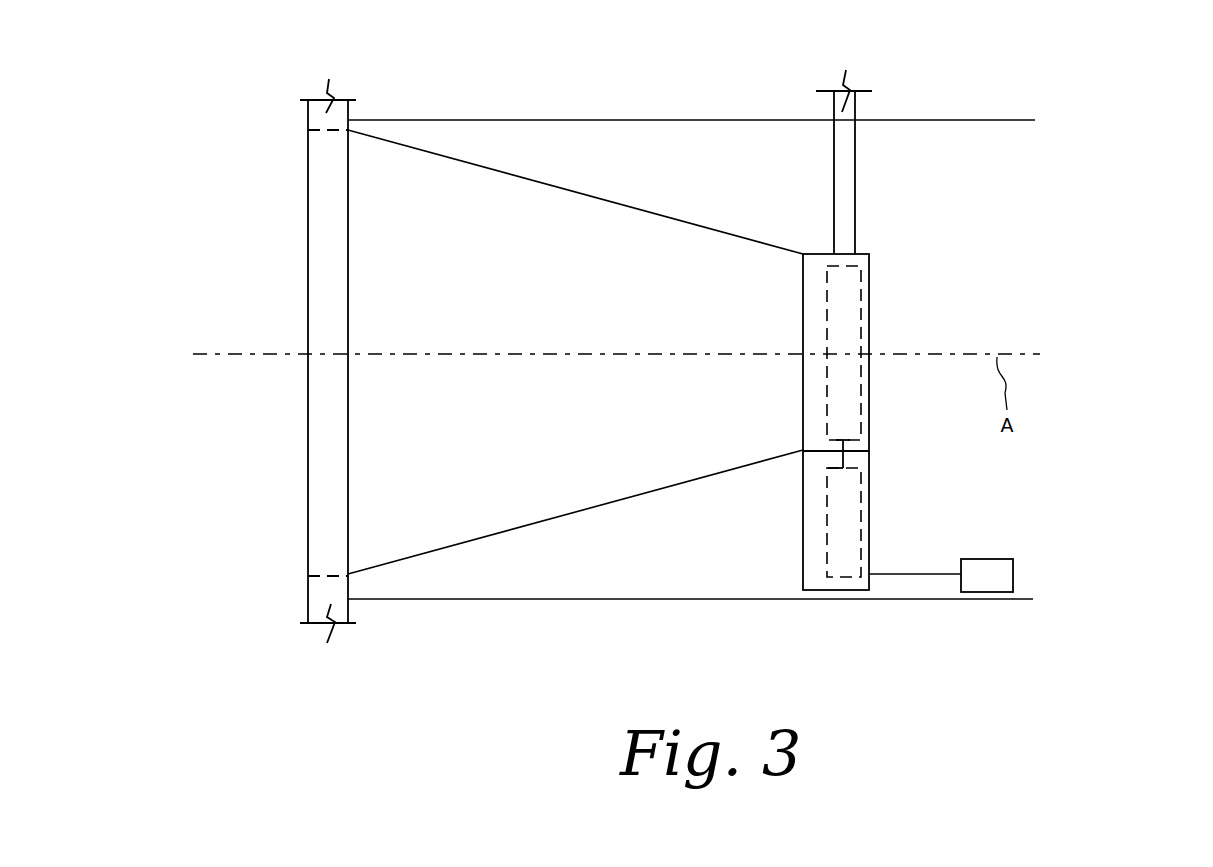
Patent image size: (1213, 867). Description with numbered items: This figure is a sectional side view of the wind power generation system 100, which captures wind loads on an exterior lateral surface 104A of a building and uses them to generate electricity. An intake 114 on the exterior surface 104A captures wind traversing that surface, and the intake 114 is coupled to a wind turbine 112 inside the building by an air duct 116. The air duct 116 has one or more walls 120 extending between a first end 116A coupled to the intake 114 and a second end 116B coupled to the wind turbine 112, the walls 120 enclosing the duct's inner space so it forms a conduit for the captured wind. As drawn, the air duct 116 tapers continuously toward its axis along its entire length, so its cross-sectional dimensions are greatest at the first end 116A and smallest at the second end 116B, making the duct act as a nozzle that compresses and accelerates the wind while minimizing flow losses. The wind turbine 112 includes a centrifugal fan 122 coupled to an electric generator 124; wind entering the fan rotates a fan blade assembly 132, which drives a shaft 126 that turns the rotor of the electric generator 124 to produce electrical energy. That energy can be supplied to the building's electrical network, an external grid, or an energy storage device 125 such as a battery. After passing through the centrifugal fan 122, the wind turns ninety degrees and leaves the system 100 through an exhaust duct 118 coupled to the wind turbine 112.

The wind power generation system 100 is at (1098, 204).
The exterior lateral surface 104A is at (315, 120).
The wind turbine 112 is at (905, 422).
The intake 114 is at (318, 303).
The air duct 116 is at (575, 306).
The first end 116A is at (357, 543).
The second end 116B is at (795, 461).
The exhaust duct 118 is at (855, 180).
The walls 120 is at (714, 230).
The centrifugal fan 122 is at (870, 287).
The electric generator 124 is at (854, 520).
The energy storage device 125 is at (1013, 567).
The shaft 126 is at (869, 453).
The fan blade assembly 132 is at (852, 402).